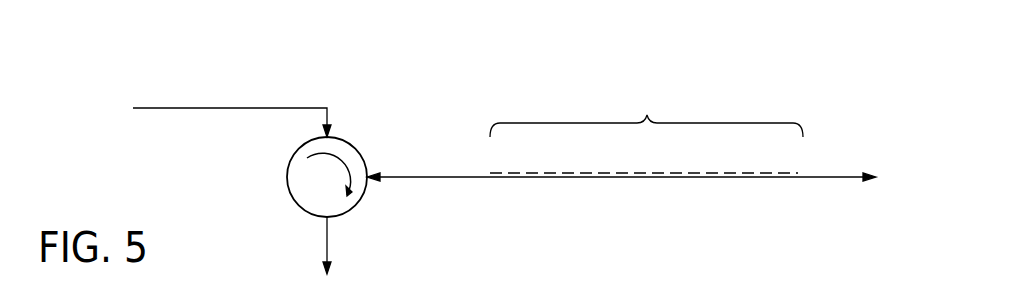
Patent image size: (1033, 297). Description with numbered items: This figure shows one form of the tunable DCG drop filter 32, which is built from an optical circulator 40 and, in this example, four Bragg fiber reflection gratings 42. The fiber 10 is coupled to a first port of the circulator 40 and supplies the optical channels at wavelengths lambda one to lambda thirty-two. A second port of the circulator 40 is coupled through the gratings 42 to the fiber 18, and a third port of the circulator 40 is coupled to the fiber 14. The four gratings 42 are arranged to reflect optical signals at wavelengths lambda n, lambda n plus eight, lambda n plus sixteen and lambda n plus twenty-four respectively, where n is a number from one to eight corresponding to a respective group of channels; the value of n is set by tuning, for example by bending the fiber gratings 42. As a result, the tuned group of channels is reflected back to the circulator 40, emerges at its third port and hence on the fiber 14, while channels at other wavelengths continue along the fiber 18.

The fiber 10 is at (330, 112).
The fiber 14 is at (325, 241).
The fiber 18 is at (828, 178).
The tunable DCG drop filter 32 is at (490, 79).
The optical circulator 40 is at (292, 177).
The Bragg fiber reflection gratings 42 is at (660, 107).